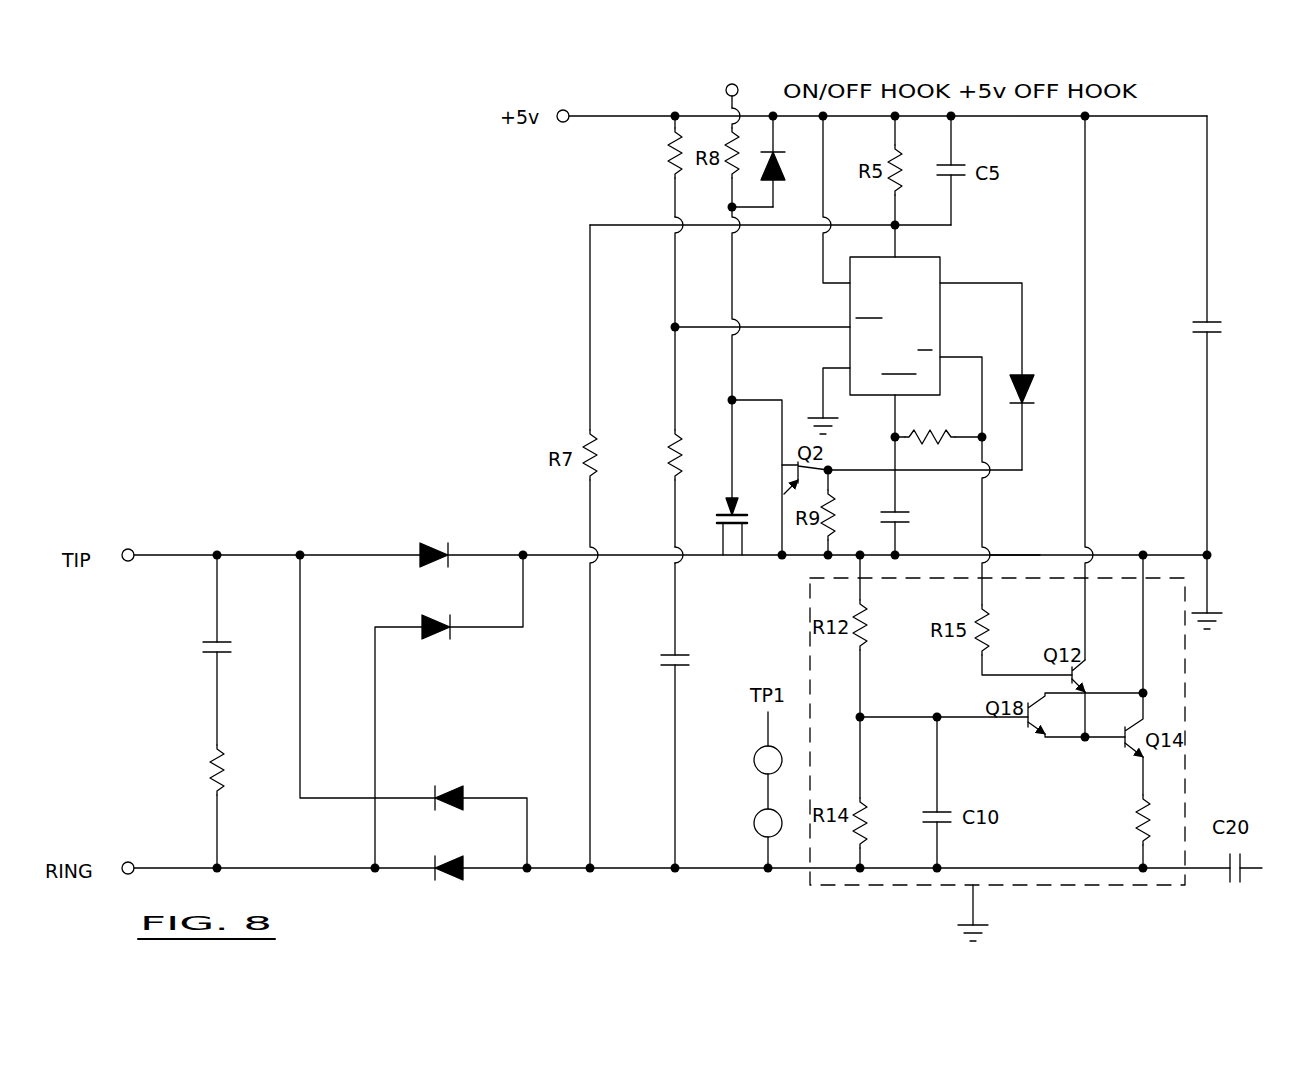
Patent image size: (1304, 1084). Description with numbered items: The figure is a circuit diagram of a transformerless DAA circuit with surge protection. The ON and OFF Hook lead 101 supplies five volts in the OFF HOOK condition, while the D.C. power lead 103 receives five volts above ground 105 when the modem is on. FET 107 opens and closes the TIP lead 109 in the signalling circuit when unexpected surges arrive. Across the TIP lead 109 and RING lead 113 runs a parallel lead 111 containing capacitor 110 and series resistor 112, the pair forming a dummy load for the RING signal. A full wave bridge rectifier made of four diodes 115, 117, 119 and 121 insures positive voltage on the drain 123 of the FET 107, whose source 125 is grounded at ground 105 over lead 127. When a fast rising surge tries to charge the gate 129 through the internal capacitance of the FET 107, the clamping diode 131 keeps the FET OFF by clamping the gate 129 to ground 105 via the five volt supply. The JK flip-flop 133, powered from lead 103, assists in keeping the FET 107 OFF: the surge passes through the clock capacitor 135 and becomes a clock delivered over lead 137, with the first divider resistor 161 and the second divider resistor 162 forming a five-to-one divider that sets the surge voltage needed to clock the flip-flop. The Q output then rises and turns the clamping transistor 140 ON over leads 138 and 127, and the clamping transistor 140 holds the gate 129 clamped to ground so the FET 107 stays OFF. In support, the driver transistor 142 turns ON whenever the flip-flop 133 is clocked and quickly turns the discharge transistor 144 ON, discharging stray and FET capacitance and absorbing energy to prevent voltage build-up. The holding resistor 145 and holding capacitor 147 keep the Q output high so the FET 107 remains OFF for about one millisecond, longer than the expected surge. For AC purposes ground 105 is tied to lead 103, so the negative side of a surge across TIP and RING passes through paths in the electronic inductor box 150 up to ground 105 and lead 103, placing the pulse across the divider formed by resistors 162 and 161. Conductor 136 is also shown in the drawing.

The ON and OFF Hook lead 101 is at (727, 88).
The D.C. power lead 103 is at (628, 114).
The ground 105 is at (1210, 604).
The FET 107 is at (712, 539).
The TIP lead 109 is at (180, 555).
The capacitor 110 is at (222, 652).
The parallel lead 111 is at (215, 606).
The series resistor 112 is at (215, 757).
The RING lead 113 is at (190, 866).
The diode 115 is at (420, 568).
The diode 117 is at (425, 640).
The diode 119 is at (455, 790).
The diode 121 is at (460, 876).
The drain 123 is at (725, 562).
The source 125 is at (743, 562).
The lead 127 is at (1012, 553).
The gate 129 is at (748, 518).
The diode D12 131 is at (790, 168).
The JK flip-flop 133 is at (915, 265).
The capacitor C4 135 is at (667, 665).
The conductor 136 is at (672, 582).
The lead 137 is at (724, 320).
The lead 138 is at (1022, 333).
The transistor Q2 140 is at (783, 465).
The transistor Q12 142 is at (1082, 676).
The transistor Q14 144 is at (1135, 752).
The resistor R10 145 is at (930, 437).
The capacitor C6 147 is at (905, 512).
The electronic inductor box 150 is at (1190, 708).
The resistor R6 161 is at (672, 470).
The resistor R4 162 is at (680, 178).